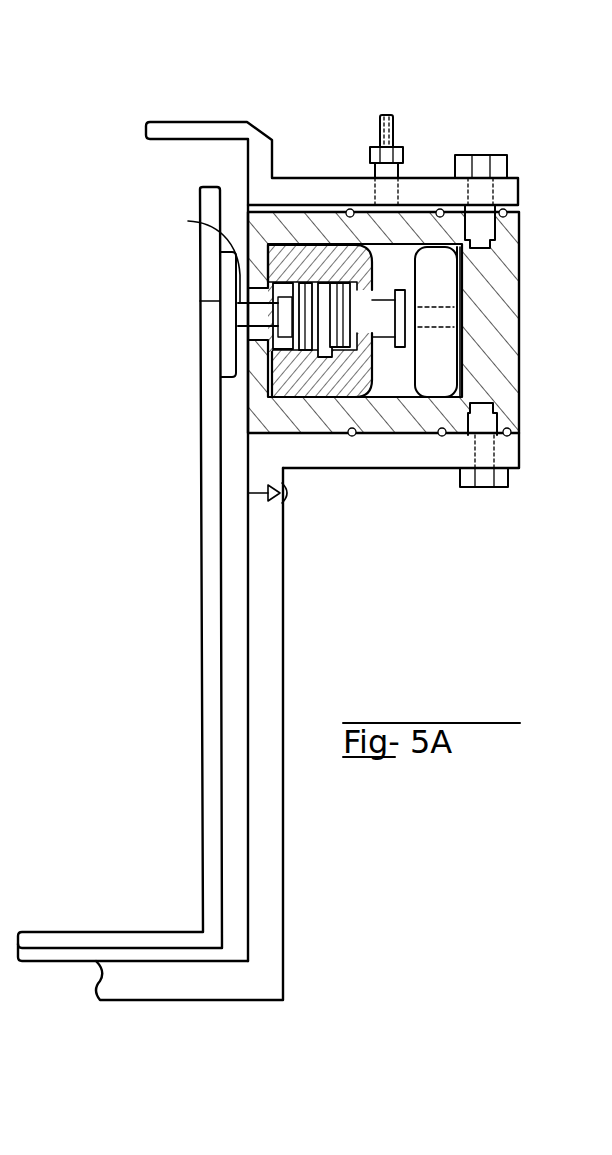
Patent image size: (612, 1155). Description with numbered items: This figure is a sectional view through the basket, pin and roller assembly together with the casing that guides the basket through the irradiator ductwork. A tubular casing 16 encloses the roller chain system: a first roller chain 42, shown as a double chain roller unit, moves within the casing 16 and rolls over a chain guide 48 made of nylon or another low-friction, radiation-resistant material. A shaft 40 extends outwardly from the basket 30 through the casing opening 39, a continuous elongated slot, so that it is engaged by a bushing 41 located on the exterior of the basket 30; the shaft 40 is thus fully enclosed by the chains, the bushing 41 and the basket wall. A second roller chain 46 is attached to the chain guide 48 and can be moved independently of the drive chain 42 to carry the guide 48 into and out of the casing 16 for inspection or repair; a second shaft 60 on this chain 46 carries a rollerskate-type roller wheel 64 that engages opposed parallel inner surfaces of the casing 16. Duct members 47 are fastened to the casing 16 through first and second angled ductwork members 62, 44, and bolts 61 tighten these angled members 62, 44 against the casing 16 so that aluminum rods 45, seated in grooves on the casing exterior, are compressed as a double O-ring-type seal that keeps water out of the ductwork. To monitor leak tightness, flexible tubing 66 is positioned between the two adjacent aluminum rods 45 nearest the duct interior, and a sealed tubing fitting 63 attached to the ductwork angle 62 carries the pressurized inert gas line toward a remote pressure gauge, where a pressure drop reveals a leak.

The tubular casing 16 is at (510, 290).
The basket 30 is at (212, 343).
The casing opening 39 is at (250, 368).
The shaft 40 is at (195, 252).
The bushing 41 is at (223, 363).
The first roller chain 42 is at (342, 357).
The second angled ductwork member 44 is at (413, 465).
The aluminum rod 45 is at (533, 477).
The second roller chain 46 is at (402, 347).
The duct member 47 is at (202, 128).
The chain guide 48 is at (347, 253).
The second shaft 60 is at (413, 321).
The bolt 61 is at (487, 155).
The first angled ductwork member 62 is at (430, 190).
The tubing fitting 63 is at (404, 148).
The roller wheel 64 is at (460, 277).
The flexible tubing 66 is at (390, 128).